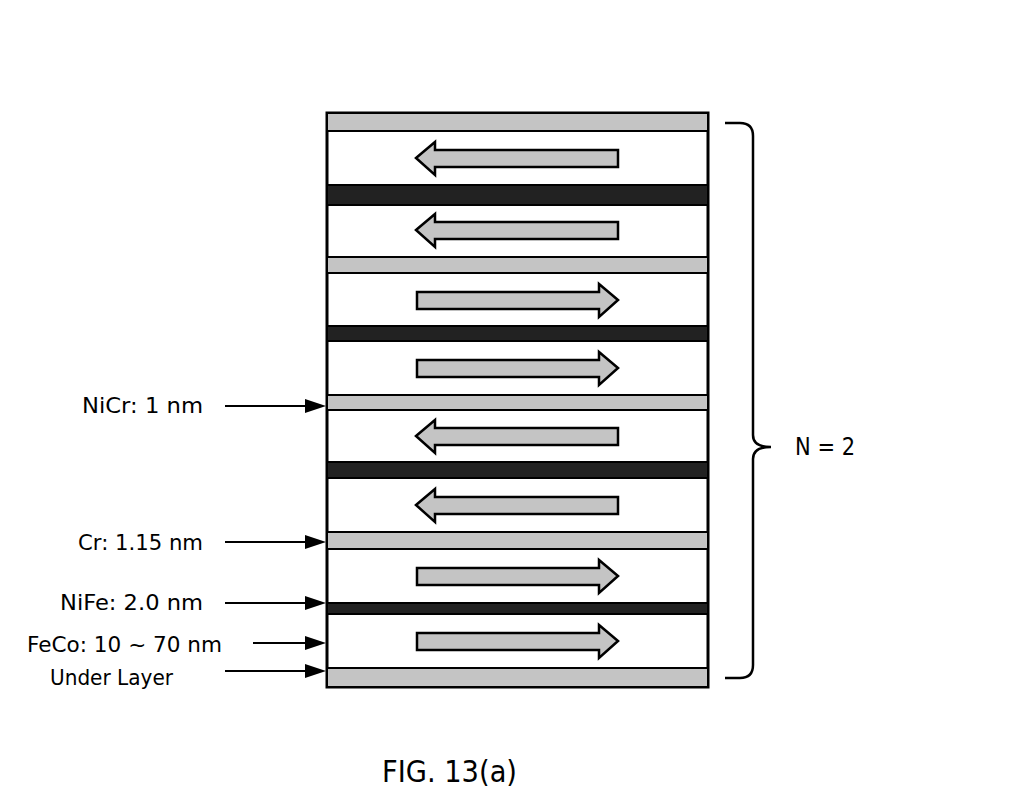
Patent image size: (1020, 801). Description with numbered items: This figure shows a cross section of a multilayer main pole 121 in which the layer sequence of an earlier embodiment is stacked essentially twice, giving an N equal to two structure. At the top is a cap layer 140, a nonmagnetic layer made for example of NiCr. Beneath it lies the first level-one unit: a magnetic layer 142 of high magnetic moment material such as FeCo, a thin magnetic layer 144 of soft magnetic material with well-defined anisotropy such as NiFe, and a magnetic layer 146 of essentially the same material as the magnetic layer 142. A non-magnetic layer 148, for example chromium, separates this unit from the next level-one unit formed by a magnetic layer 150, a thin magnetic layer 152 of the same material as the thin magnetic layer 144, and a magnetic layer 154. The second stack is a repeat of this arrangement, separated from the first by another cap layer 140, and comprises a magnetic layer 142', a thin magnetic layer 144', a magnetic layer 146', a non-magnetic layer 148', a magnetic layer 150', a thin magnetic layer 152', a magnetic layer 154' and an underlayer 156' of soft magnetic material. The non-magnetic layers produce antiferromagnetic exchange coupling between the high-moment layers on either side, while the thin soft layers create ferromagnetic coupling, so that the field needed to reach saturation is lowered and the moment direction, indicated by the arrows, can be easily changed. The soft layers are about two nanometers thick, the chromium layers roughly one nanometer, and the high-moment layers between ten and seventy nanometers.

The main pole 121 is at (730, 55).
The cap layer 140 is at (326, 122).
The magnetic layer 142 is at (442, 180).
The thin magnetic layer 144 is at (574, 200).
The magnetic layer 146 is at (618, 232).
The non-magnetic layer 148 is at (574, 269).
The magnetic layer 150 is at (619, 301).
The thin magnetic layer 152 is at (574, 339).
The magnetic layer 154 is at (619, 371).
The magnetic layer 142' is at (434, 452).
The thin magnetic layer 144' is at (487, 492).
The magnetic layer 146' is at (621, 508).
The non-magnetic layer 148' is at (577, 547).
The magnetic layer 150' is at (622, 578).
The thin magnetic layer 152' is at (577, 618).
The magnetic layer 154' is at (622, 647).
The underlayer 156' is at (577, 686).